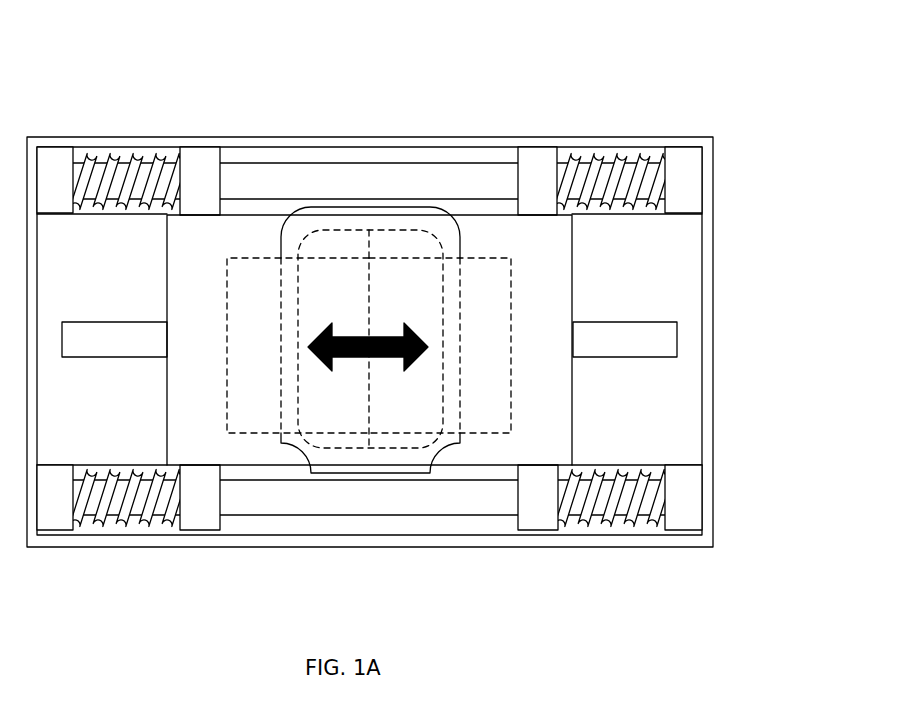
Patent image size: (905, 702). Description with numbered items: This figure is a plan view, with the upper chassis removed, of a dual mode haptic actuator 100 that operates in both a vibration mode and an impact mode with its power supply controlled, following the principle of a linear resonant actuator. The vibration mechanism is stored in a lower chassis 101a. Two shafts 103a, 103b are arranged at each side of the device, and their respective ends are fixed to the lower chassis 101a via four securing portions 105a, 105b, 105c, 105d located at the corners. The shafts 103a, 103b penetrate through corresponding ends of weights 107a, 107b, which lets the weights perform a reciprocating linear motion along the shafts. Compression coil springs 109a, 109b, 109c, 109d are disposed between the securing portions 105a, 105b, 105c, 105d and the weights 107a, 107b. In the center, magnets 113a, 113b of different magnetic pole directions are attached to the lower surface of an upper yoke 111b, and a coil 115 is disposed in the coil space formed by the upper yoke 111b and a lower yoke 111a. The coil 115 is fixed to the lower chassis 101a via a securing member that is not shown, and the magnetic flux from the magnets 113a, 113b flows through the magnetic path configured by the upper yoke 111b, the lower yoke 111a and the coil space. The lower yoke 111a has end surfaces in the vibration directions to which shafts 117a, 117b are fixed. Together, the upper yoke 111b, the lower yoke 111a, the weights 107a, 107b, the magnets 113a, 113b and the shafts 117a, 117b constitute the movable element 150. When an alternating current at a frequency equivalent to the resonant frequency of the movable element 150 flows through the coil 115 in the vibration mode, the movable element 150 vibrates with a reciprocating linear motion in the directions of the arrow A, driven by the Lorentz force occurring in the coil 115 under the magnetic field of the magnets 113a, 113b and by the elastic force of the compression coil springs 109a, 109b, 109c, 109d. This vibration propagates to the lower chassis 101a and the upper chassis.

The actuator 100 is at (738, 98).
The lower chassis 101a is at (383, 137).
The shaft 103a is at (297, 167).
The shaft 103b is at (266, 517).
The securing portion 105a is at (53, 165).
The securing portion 105b is at (683, 165).
The securing portion 105c is at (60, 465).
The securing portion 105d is at (688, 523).
The weight 107a is at (202, 163).
The weight 107b is at (542, 165).
The compression coil spring 109a is at (117, 153).
The compression coil spring 109b is at (618, 165).
The compression coil spring 109c is at (118, 522).
The compression coil spring 109d is at (597, 527).
The lower yoke 111a is at (200, 497).
The upper yoke 111b is at (573, 438).
The magnet 113a is at (228, 330).
The magnet 113b is at (511, 320).
The coil 115 is at (462, 375).
The shaft 117a is at (85, 322).
The shaft 117b is at (635, 322).
The movable element 150 is at (577, 304).
The arrow A is at (360, 337).